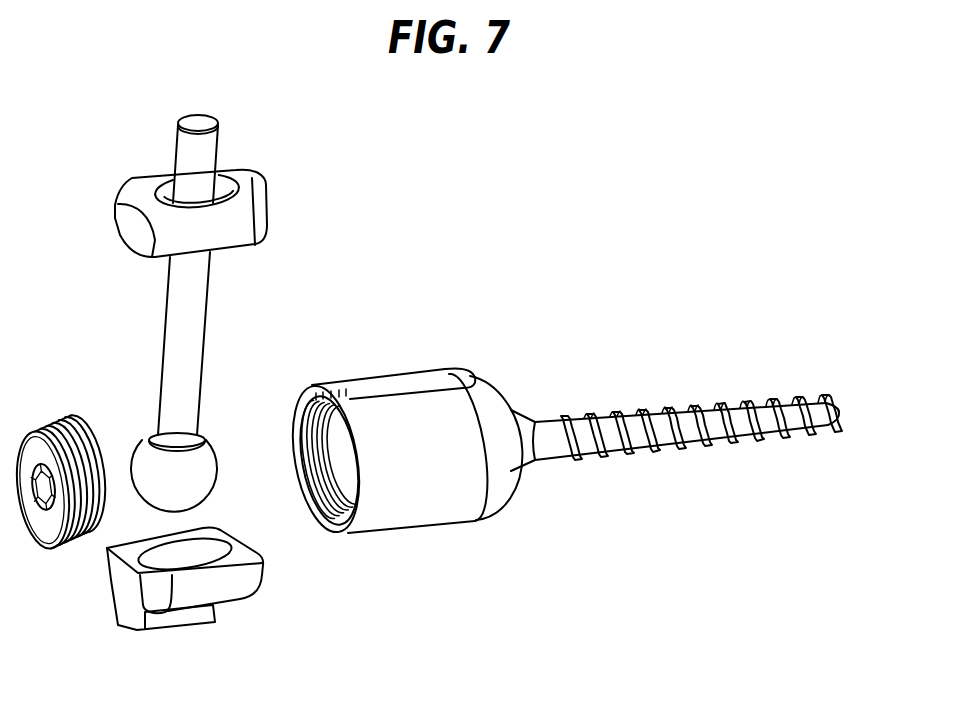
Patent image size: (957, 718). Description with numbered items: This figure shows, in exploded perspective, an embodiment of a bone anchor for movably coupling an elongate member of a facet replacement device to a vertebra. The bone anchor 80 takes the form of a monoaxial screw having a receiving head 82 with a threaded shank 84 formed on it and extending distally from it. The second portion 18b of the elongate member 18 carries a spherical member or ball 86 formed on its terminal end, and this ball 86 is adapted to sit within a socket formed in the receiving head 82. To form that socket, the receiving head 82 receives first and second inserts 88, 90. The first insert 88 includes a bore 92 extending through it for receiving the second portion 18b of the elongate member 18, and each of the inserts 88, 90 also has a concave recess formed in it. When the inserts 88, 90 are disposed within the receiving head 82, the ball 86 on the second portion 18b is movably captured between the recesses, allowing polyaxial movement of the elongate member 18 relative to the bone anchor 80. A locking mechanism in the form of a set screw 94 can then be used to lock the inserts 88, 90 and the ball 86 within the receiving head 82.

The elongate member 18 is at (87, 282).
The second portion of the elongate member 18b is at (190, 338).
The bone anchor 80 is at (638, 250).
The receiving head 82 is at (490, 378).
The threaded shank 84 is at (710, 400).
The ball 86 is at (152, 465).
The first insert 88 is at (267, 215).
The second insert 90 is at (262, 574).
The bore 92 is at (224, 175).
The set screw 94 is at (50, 423).